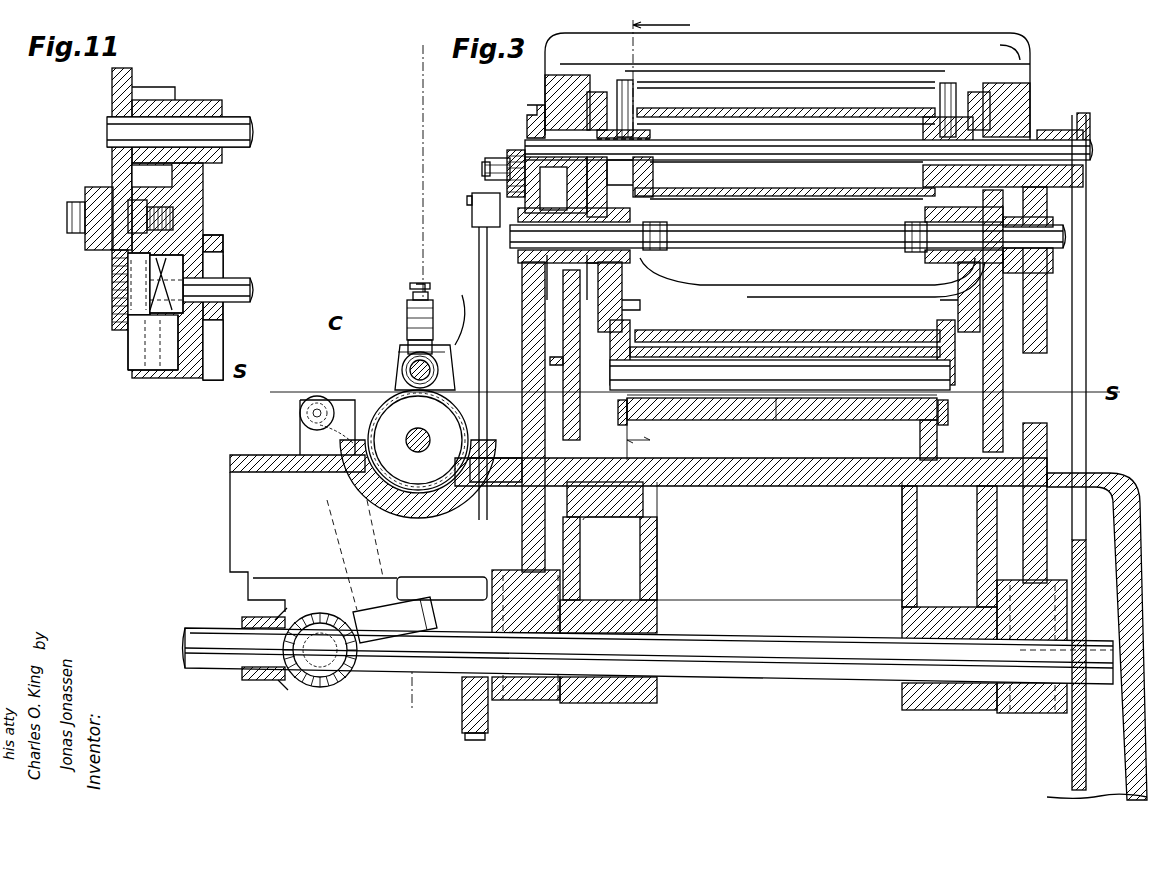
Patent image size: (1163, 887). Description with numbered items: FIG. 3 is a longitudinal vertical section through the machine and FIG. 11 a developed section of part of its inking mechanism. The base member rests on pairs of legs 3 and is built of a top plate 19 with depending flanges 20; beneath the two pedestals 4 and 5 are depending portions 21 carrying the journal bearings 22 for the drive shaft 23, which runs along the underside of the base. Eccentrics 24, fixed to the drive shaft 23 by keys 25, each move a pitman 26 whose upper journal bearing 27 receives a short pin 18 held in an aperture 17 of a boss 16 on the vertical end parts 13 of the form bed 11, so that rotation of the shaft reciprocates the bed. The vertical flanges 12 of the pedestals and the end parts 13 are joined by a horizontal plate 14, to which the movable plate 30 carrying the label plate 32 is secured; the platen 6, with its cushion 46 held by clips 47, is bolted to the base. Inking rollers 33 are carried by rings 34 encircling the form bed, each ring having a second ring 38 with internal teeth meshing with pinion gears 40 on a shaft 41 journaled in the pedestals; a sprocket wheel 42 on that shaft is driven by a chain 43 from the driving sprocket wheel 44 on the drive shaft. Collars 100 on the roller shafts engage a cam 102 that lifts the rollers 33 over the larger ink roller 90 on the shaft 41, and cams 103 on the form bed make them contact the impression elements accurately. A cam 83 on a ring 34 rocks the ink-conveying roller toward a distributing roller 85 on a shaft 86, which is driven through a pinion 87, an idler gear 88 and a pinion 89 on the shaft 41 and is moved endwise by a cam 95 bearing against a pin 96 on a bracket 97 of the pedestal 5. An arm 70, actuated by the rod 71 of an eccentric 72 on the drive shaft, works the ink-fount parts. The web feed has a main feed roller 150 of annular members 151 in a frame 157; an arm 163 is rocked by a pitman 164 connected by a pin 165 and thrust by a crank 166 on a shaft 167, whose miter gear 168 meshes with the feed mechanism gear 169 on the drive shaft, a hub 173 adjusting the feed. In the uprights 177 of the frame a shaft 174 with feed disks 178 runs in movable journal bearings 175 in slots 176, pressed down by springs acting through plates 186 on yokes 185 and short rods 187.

In FIG. 3, the legs 3 is at (1097, 784).
In FIG. 3, the pedestal 4 is at (1030, 100).
In FIG. 3, the pedestal 5 is at (545, 85).
In FIG. 3, the platen 6 is at (770, 425).
In FIG. 3, the form bed 11 is at (700, 310).
In FIG. 3, the vertical flanges 12 is at (787, 86).
In FIG. 3, the vertical end parts 13 is at (622, 290).
In FIG. 3, the horizontal plate 14 is at (815, 342).
In FIG. 3, the bosses 16 is at (655, 250).
In FIG. 3, the apertures 17 is at (1020, 225).
In FIG. 3, the short shafts or pins 18 is at (635, 240).
In FIG. 3, the top plate 19 is at (798, 484).
In FIG. 3, the depending flanges 20 is at (1118, 535).
In FIG. 3, the depending portions 21 is at (700, 552).
In FIG. 3, the journal bearings 22 is at (657, 622).
In FIG. 3, the drive shaft 23 is at (800, 685).
In FIG. 3, the eccentrics 24 is at (540, 702).
In FIG. 3, the keys 25 is at (560, 625).
In FIG. 3, the pitman 26 is at (540, 365).
In FIG. 3, the journal bearing 27 is at (522, 275).
In FIG. 3, the movable plate 30 is at (735, 355).
In FIG. 3, the printing or label plate 32 is at (720, 397).
In FIG. 3, the inking rollers 33 is at (822, 100).
In FIG. 3, the rings 34 is at (595, 92).
In FIG. 3, the second ring 38 is at (1012, 112).
In FIG. 3, the pinion gears 40 is at (530, 108).
In FIG. 11, the shaft 41 is at (246, 130).
In FIG. 3, the shaft 41 is at (800, 145).
In FIG. 3, the sprocket wheel 42 is at (1083, 178).
In FIG. 3, the chain 43 is at (1086, 360).
In FIG. 3, the driving sprocket wheel 44 is at (1072, 770).
In FIG. 3, the cushion 46 is at (848, 420).
In FIG. 3, the clips 47 is at (618, 414).
In FIG. 3, the arm 70 is at (490, 210).
In FIG. 3, the rod 71 is at (479, 245).
In FIG. 3, the eccentric 72 is at (467, 733).
In FIG. 3, the cam 83 is at (1012, 43).
In FIG. 3, the distributing or oscillating roller 85 is at (778, 245).
In FIG. 11, the shaft 86 is at (228, 278).
In FIG. 11, the pinion 87 is at (112, 267).
In FIG. 3, the pinion 87 is at (507, 190).
In FIG. 11, the idler gear 88 is at (100, 187).
In FIG. 3, the idler gear 88 is at (485, 165).
In FIG. 11, the pinion 89 is at (112, 95).
In FIG. 3, the pinion 89 is at (525, 124).
In FIG. 3, the larger ink roller 90 is at (785, 180).
In FIG. 11, the cam 95 is at (128, 305).
In FIG. 11, the pin 96 is at (158, 312).
In FIG. 11, the bracket 97 is at (160, 370).
In FIG. 3, the collars 100 is at (622, 82).
In FIG. 3, the cam 102 is at (650, 130).
In FIG. 3, the cams 103 is at (630, 340).
In FIG. 3, the main feed roller 150 is at (418, 440).
In FIG. 3, the annular members 151 is at (416, 451).
In FIG. 3, the frame 157 is at (300, 440).
In FIG. 3, the arm 163 is at (256, 380).
In FIG. 3, the pitman 164 is at (336, 548).
In FIG. 3, the pin 165 is at (300, 410).
In FIG. 3, the crank 166 is at (397, 577).
In FIG. 3, the shaft 167 is at (338, 677).
In FIG. 3, the miter gear 168 is at (310, 687).
In FIG. 3, the miter gear (feed mechanism gear) 169 is at (278, 685).
In FIG. 3, the hub 173 is at (437, 610).
In FIG. 3, the shaft 174 is at (402, 373).
In FIG. 3, the movable journal bearings 175 is at (405, 365).
In FIG. 3, the slots 176 is at (408, 345).
In FIG. 3, the uprights 177 is at (455, 316).
In FIG. 3, the feed disks 178 is at (398, 352).
In FIG. 3, the yokes 185 is at (407, 312).
In FIG. 3, the plates 186 is at (413, 294).
In FIG. 3, the short rods 187 is at (428, 292).